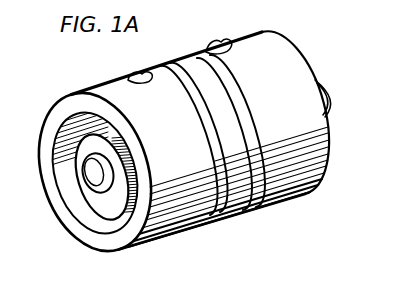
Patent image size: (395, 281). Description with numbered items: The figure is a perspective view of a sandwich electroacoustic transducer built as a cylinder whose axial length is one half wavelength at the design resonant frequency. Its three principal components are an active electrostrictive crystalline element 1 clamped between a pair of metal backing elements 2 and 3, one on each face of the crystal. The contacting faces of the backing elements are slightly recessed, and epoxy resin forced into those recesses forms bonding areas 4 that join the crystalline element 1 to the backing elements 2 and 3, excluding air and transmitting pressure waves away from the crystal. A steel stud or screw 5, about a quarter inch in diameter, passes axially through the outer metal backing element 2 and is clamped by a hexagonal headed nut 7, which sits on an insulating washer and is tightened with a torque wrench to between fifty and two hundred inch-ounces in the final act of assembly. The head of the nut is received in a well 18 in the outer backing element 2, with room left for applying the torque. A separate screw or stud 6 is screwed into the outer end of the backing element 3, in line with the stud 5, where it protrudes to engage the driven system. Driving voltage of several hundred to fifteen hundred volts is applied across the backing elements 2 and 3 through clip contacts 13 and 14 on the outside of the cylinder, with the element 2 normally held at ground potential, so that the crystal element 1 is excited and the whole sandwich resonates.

The electrostrictive crystalline element 1 is at (227, 210).
The outer metal backing element 2 is at (154, 243).
The metal backing element 3 is at (298, 68).
The bonding areas 4 is at (201, 105).
The stud or screw 5 is at (92, 174).
The screw or stud 6 is at (326, 92).
The hexagonal headed nut 7 is at (103, 198).
The clip contact 13 is at (141, 72).
The clip contact 14 is at (227, 40).
The well 18 is at (57, 139).